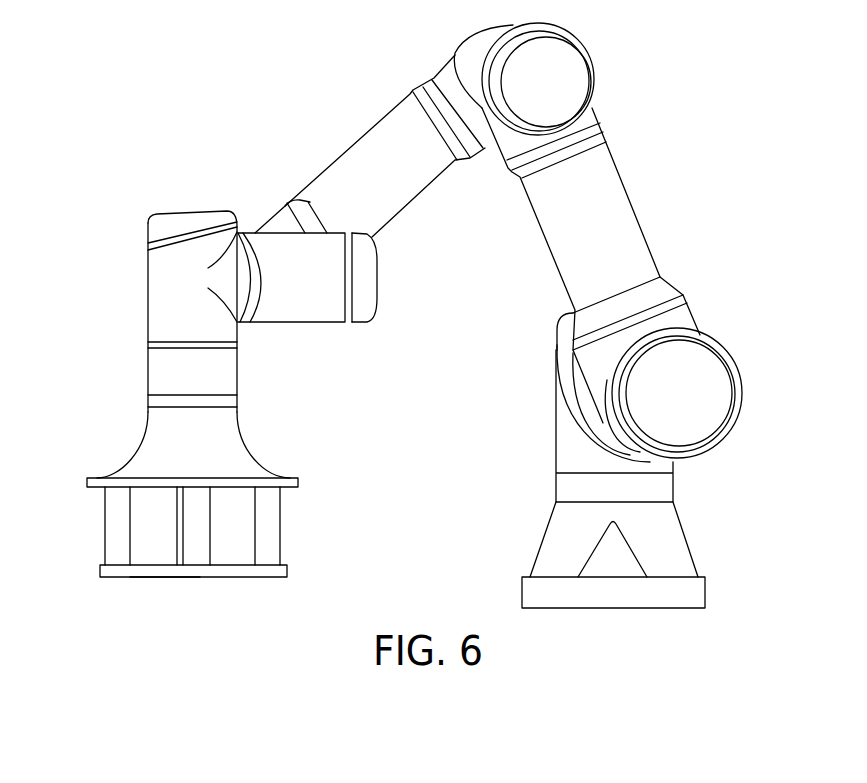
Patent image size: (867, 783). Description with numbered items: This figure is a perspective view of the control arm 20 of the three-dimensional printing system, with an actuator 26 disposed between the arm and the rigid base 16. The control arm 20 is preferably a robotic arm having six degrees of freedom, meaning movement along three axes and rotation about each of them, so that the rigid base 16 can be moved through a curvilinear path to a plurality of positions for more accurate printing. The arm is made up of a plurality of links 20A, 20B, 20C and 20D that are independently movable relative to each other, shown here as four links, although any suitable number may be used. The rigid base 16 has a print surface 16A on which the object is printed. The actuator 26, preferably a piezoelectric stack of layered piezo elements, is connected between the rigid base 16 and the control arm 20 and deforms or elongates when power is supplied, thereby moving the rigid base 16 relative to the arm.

The rigid base 16 is at (100, 571).
The print surface 16A is at (152, 577).
The control arm 20 is at (148, 432).
The link 20A is at (148, 295).
The link 20B is at (358, 148).
The link 20C is at (633, 210).
The link 20D is at (688, 537).
The actuator 26 is at (105, 524).